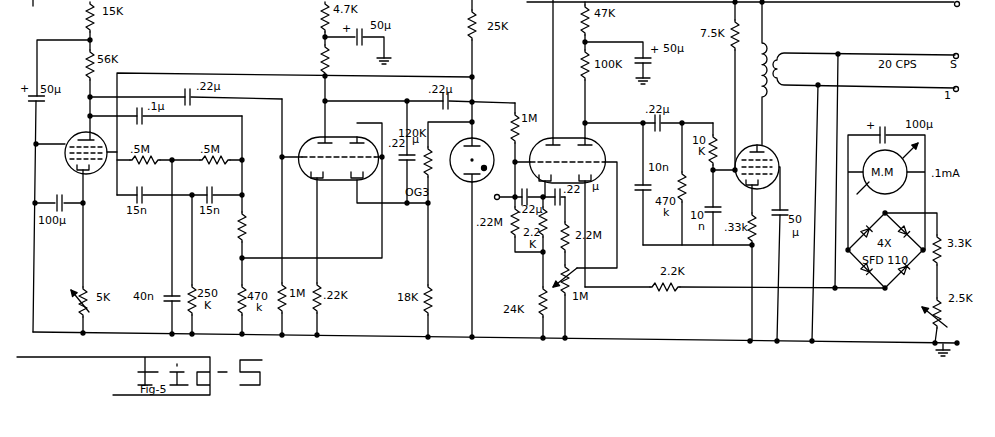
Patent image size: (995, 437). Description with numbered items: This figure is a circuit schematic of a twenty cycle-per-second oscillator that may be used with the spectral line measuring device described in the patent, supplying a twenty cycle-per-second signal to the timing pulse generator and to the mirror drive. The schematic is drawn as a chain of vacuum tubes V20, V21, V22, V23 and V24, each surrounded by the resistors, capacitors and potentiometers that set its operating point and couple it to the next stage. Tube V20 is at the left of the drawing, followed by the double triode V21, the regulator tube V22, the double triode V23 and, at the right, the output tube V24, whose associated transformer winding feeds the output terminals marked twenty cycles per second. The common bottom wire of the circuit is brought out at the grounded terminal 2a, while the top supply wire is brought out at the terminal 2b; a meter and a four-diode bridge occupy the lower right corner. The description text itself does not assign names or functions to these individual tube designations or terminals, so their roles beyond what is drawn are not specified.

The pentode amplifier tube B47 V20 is at (74, 149).
The double triode 12AT7 V21 is at (333, 164).
The voltage regulator tube OG3 V22 is at (477, 154).
The double triode 12AX7 V23 is at (574, 153).
The output tube 6OL5 V24 is at (773, 159).
The ground terminal 2a is at (967, 344).
The supply terminal 2b is at (957, 15).